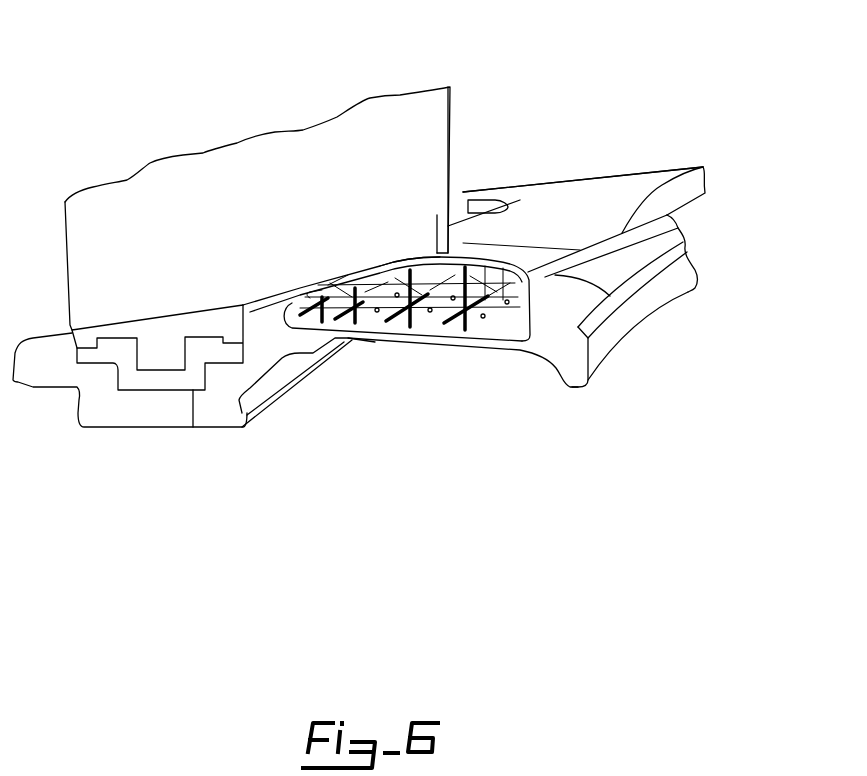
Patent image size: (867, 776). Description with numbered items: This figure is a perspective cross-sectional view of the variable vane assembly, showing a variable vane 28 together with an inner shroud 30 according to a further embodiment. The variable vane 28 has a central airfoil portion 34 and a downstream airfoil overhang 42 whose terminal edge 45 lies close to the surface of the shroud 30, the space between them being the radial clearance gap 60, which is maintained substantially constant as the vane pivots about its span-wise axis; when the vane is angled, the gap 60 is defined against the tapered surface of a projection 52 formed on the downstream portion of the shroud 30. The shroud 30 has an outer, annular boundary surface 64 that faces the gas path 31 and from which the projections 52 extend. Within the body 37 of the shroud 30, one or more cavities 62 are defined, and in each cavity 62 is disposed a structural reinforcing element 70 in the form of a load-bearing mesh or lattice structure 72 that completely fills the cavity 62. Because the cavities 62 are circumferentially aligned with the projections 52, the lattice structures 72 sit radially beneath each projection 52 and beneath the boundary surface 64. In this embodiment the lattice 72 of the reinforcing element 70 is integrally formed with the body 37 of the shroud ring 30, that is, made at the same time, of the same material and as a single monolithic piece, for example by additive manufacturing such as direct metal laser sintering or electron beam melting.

The variable vane 28 is at (237, 163).
The central airfoil portion 34 is at (355, 120).
The radial clearance gap 60 is at (420, 258).
The gas path 31 is at (473, 159).
The terminal edge 45 is at (437, 217).
The projection 52 is at (532, 258).
The outer annular boundary surface 64 is at (607, 216).
The inner shroud 30 is at (687, 222).
The airfoil overhang 42 is at (386, 281).
The body 37 is at (610, 296).
The cavity 62 is at (503, 333).
The structural reinforcing element 70 is at (410, 349).
The mesh lattice structure 72 is at (417, 313).